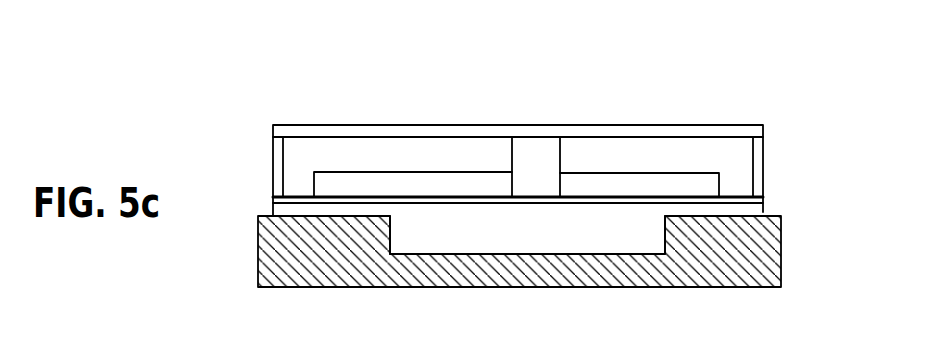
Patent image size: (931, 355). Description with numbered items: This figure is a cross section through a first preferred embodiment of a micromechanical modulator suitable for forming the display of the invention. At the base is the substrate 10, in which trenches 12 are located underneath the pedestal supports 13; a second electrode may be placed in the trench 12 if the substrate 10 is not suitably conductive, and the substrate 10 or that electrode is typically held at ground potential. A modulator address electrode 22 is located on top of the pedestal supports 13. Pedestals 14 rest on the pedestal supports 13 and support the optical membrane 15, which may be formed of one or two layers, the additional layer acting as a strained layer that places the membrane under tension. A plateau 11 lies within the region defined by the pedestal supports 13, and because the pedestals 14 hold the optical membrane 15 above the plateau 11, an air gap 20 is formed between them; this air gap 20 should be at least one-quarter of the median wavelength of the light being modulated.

The substrate 10 is at (782, 248).
The plateau 11 is at (645, 183).
The trench 12 is at (448, 247).
The pedestal support 13 is at (763, 208).
The pedestal 14 is at (273, 158).
The optical membrane 15 is at (483, 125).
The air gap 20 is at (395, 166).
The modulator address electrode 22 is at (290, 203).